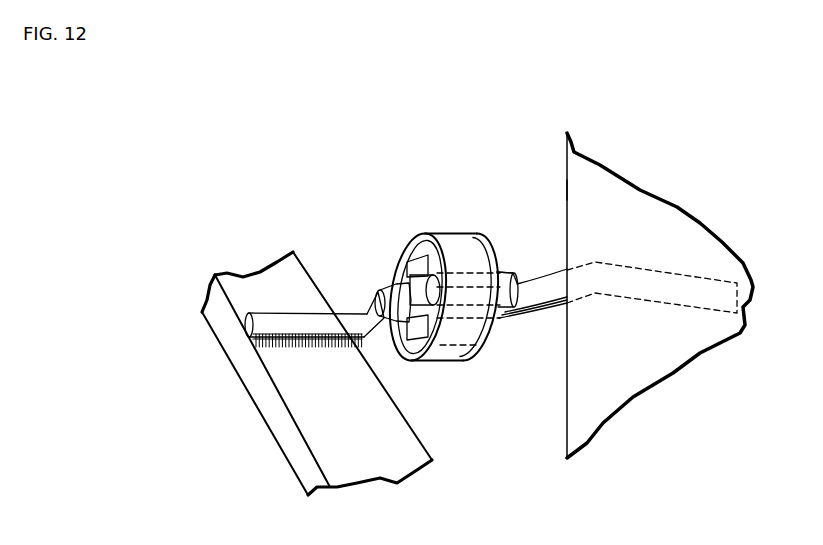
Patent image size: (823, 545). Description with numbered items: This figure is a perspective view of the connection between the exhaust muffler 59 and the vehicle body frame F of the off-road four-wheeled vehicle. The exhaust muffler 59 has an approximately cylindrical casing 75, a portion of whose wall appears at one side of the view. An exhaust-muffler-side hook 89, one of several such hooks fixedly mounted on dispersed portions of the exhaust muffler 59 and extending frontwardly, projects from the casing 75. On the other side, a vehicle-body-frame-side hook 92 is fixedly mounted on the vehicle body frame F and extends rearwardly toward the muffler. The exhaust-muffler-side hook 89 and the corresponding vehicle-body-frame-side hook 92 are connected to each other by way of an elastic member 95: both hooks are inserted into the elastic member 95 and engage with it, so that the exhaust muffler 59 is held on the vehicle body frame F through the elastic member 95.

The vehicle body frame F is at (243, 385).
The elastic member 95 is at (467, 233).
The vehicle-body-frame-side hook 92 is at (513, 277).
The exhaust-muffler-side hook 89 is at (530, 303).
The casing 75 is at (632, 202).
The exhaust muffler 59 is at (566, 178).